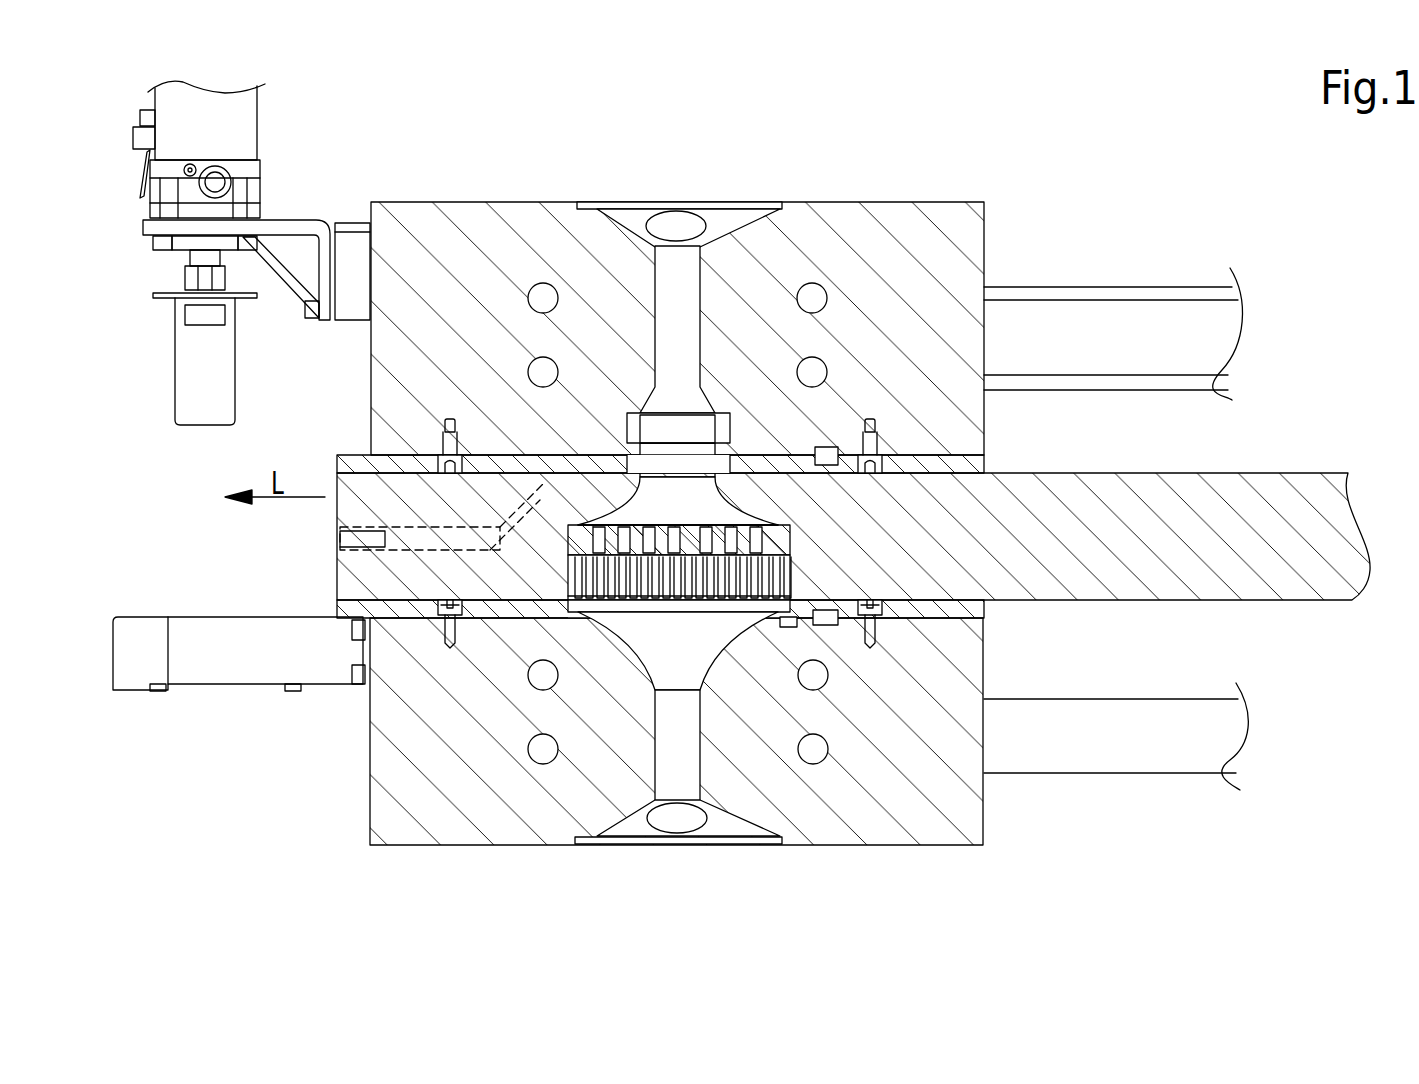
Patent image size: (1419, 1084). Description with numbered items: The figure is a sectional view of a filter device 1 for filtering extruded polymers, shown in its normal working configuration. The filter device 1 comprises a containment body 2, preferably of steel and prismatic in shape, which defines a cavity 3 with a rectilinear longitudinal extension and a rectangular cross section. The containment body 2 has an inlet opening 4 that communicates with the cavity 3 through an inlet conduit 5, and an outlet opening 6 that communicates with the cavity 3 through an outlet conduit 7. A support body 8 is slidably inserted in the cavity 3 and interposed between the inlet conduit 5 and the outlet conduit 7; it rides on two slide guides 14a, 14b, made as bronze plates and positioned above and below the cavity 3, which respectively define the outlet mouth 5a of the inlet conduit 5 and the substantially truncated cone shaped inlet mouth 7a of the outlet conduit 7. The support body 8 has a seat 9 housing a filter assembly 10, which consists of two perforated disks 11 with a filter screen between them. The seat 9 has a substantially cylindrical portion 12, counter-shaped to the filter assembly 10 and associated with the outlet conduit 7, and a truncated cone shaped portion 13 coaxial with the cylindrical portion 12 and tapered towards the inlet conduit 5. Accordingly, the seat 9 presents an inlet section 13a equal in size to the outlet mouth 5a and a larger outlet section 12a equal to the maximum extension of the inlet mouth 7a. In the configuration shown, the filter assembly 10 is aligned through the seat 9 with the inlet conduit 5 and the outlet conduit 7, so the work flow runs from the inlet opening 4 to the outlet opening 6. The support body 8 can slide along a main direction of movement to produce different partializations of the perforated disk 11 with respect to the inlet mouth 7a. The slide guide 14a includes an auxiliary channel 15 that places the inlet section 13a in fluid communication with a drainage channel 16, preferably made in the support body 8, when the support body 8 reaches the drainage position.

The filter device 1 is at (975, 152).
The containment body 2 is at (523, 223).
The cavity 3 is at (1038, 619).
The inlet opening 4 is at (723, 220).
The inlet conduit 5 is at (672, 293).
The outlet mouth 5a is at (647, 463).
The outlet opening 6 is at (720, 827).
The outlet conduit 7 is at (655, 750).
The inlet mouth 7a is at (705, 632).
The support body 8 is at (1277, 501).
The seat 9 is at (760, 497).
The filter assembly 10 is at (562, 597).
The perforated disks 11 is at (790, 542).
The cylindrical portion 12 is at (570, 572).
The outlet section 12a is at (740, 598).
The truncated cone shaped portion 13 is at (745, 495).
The inlet section 13a is at (625, 452).
The slide guide 14a is at (923, 463).
The slide guide 14b is at (960, 608).
The auxiliary channel 15 is at (478, 470).
The drainage channel 16 is at (400, 550).